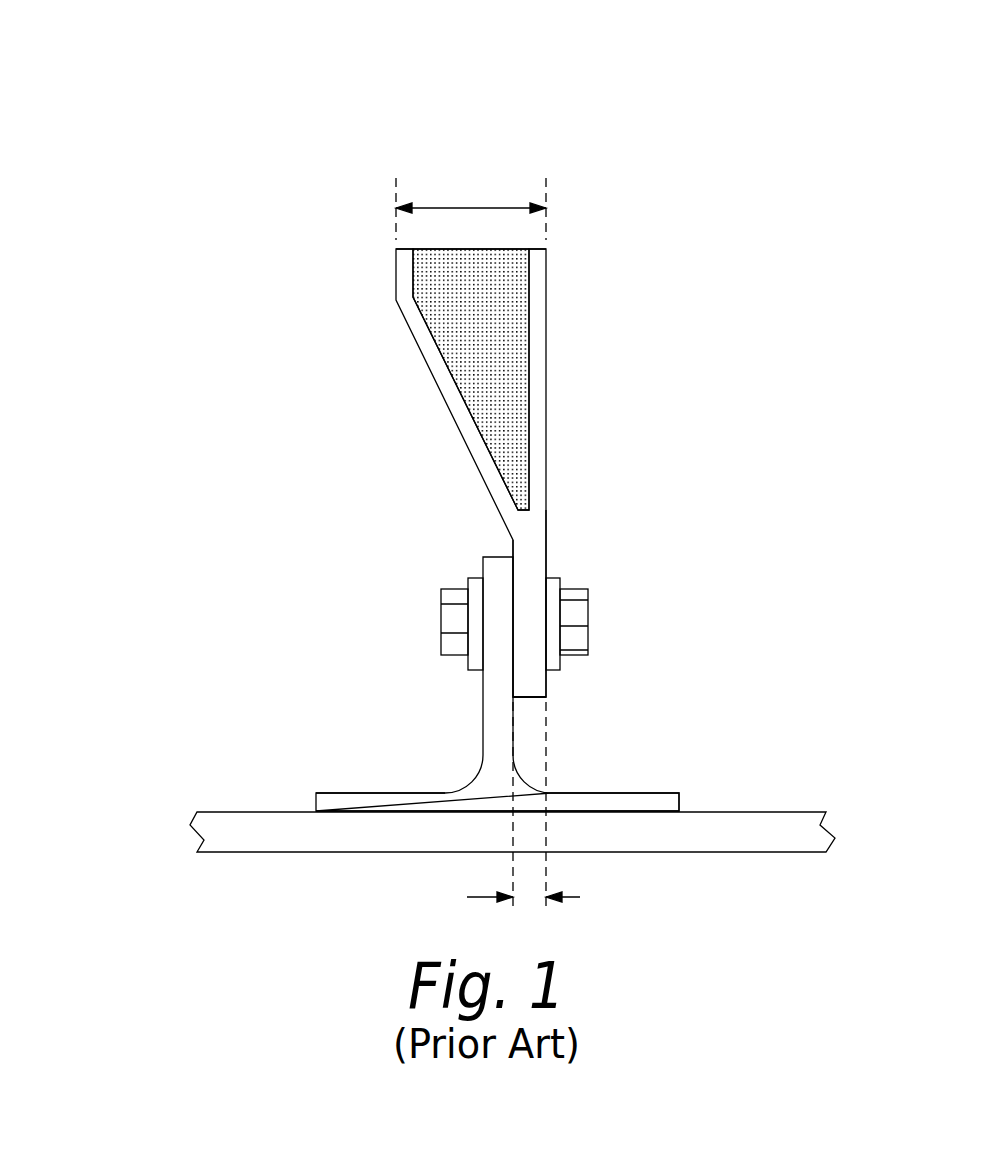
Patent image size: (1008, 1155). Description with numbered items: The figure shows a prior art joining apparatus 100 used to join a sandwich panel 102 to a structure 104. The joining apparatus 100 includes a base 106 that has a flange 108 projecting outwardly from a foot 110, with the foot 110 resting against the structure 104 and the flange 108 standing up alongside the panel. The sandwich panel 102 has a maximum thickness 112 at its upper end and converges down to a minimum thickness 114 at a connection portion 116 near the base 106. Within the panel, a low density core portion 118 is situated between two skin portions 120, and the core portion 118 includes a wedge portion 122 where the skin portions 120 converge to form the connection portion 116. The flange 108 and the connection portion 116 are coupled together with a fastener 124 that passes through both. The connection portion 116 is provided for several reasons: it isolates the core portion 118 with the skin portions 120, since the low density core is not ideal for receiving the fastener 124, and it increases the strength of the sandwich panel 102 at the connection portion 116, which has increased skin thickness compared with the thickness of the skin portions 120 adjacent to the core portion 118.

The joining apparatus 100 is at (143, 80).
The sandwich panel 102 is at (577, 265).
The structure 104 is at (753, 812).
The base 106 is at (577, 757).
The flange 108 is at (482, 717).
The foot 110 is at (365, 793).
The maximum thickness 112 is at (458, 208).
The minimum thickness 114 is at (592, 897).
The connection portion 116 is at (557, 542).
The core portion 118 is at (458, 345).
The skin portions 120 is at (397, 303).
The wedge portion 122 is at (518, 432).
The fastener 124 is at (428, 602).